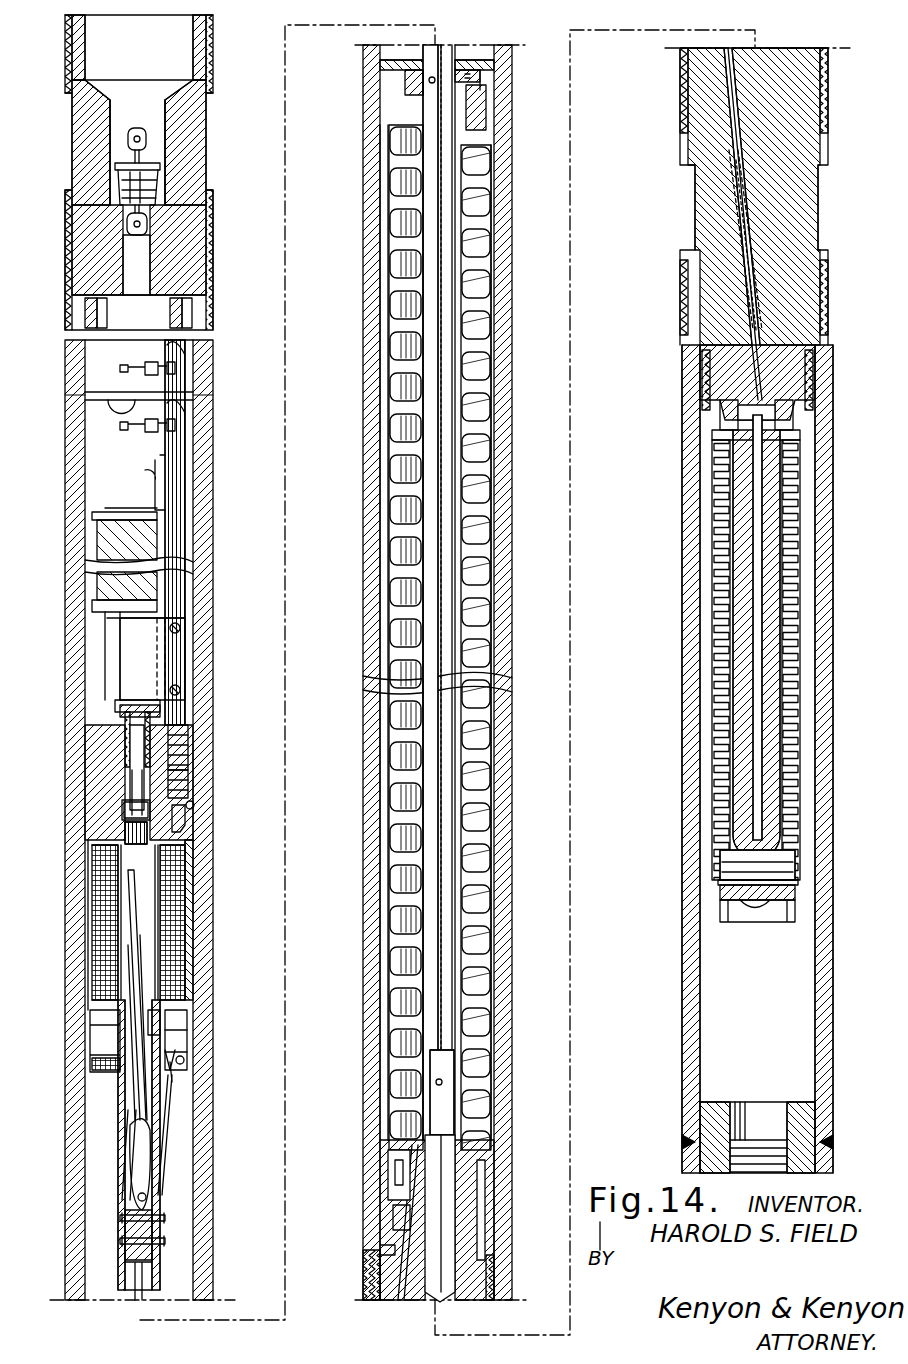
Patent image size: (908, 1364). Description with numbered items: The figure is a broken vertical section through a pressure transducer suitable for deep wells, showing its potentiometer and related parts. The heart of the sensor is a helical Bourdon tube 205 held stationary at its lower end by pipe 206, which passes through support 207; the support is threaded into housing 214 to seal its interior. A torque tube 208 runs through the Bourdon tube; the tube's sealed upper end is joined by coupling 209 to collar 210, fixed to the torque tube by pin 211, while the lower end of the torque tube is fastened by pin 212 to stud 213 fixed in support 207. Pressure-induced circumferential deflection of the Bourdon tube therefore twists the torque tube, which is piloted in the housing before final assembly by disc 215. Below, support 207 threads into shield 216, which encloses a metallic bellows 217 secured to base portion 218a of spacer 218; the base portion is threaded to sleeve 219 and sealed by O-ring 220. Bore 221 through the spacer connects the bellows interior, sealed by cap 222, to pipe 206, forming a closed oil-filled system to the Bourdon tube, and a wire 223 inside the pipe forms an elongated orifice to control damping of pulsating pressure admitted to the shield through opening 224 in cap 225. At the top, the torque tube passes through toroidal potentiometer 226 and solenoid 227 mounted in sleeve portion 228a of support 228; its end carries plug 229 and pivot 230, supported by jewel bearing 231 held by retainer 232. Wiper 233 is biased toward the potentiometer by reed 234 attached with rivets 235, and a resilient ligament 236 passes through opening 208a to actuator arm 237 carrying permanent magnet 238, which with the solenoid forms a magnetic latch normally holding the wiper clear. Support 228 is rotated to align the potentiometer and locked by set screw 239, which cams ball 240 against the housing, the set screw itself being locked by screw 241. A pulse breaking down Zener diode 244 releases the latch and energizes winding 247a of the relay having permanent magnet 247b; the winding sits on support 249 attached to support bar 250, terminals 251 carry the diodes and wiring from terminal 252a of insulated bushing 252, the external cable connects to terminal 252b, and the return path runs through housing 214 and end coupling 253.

The helical Bourdon tube 205 is at (395, 597).
The pipe 206 is at (400, 1234).
The support 207 is at (385, 1295).
The torque tube 208 is at (125, 1120).
The opening 208a is at (165, 1028).
The coupling 209 is at (480, 115).
The collar 210 is at (402, 78).
The pin 211 is at (425, 85).
The pin 212 is at (448, 1082).
The stud 213 is at (435, 1213).
The housing 214 is at (216, 345).
The disc 215 is at (487, 68).
The shield 216 is at (688, 684).
The bellows 217 is at (715, 805).
The spacer 218 is at (735, 658).
The base portion 218a is at (728, 440).
The sleeve 219 is at (705, 364).
The O-ring 220 is at (728, 422).
The bore 221 is at (762, 832).
The cap 222 is at (780, 900).
The wire 223 is at (745, 230).
The opening 224 is at (740, 1108).
The cap 225 is at (700, 1160).
The toroidal potentiometer 226 is at (190, 1062).
The solenoid 227 is at (175, 920).
The support 228 is at (90, 748).
The sleeve portion 228a is at (195, 967).
The plug 229 is at (132, 848).
The pivot 230 is at (138, 820).
The jewel bearing 231 is at (128, 782).
The retainer 232 is at (120, 708).
The wiper 233 is at (182, 1080).
The reed 234 is at (170, 1122).
The rivets 235 is at (168, 1243).
The resilient ligament 236 is at (140, 1045).
The actuator arm 237 is at (135, 1100).
The permanent magnet 238 is at (135, 957).
The set screw 239 is at (192, 778).
The pin 240 is at (195, 805).
The screw 241 is at (192, 745).
The Zener diode 244 is at (110, 406).
The winding 247a is at (100, 538).
The permanent magnet 247b is at (110, 645).
The support 249 is at (145, 640).
The support bar 250 is at (177, 464).
The terminals 251 is at (140, 368).
The insulated bushing 252 is at (128, 190).
The terminal 252a is at (140, 218).
The terminal 252b is at (133, 136).
The end coupling 253 is at (85, 157).